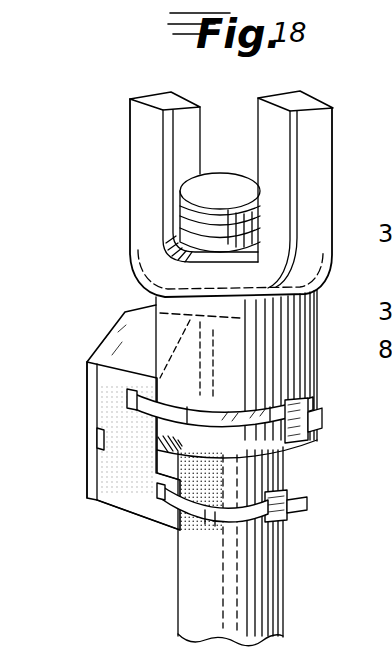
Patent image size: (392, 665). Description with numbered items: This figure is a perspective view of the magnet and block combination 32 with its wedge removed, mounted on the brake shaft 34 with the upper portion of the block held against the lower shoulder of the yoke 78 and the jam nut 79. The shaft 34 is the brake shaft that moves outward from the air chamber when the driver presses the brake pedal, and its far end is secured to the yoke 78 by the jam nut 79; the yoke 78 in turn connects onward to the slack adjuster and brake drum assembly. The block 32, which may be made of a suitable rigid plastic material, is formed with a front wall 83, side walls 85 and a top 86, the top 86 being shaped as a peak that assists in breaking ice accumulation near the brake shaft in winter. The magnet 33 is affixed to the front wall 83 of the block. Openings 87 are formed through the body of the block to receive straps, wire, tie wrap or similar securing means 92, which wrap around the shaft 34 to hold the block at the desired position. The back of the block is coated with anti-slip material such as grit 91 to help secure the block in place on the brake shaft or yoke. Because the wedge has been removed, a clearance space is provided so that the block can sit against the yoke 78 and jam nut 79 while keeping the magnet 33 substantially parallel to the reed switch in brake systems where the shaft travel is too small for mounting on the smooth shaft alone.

The yoke 78 is at (330, 166).
The top 86 is at (125, 313).
The magnet block combination 32 is at (88, 330).
The openings 87 is at (128, 393).
The front wall 83 is at (87, 407).
The magnet 33 is at (90, 467).
The side walls 85 is at (110, 490).
The jam nut 79 is at (298, 440).
The securing means 92 is at (212, 510).
The grit 91 is at (283, 482).
The shaft 34 is at (257, 558).